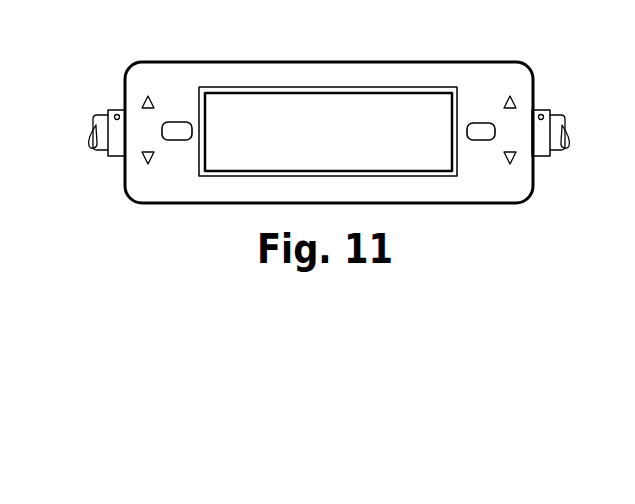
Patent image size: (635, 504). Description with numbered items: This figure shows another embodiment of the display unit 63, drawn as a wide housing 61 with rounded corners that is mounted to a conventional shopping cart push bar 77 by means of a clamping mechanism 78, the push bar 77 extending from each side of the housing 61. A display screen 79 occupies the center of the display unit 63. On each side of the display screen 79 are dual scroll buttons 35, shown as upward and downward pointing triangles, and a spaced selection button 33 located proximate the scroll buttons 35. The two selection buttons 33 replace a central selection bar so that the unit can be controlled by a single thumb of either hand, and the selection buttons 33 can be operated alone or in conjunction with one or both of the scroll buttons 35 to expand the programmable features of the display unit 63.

The remote control unit housing 61 is at (325, 58).
The display unit 63 is at (477, 75).
The display screen 79 is at (390, 88).
The selection buttons 33 is at (175, 142).
The scroll buttons 35 is at (143, 102).
The shopping cart push bar 77 is at (93, 117).
The clamping mechanism 78 is at (96, 156).